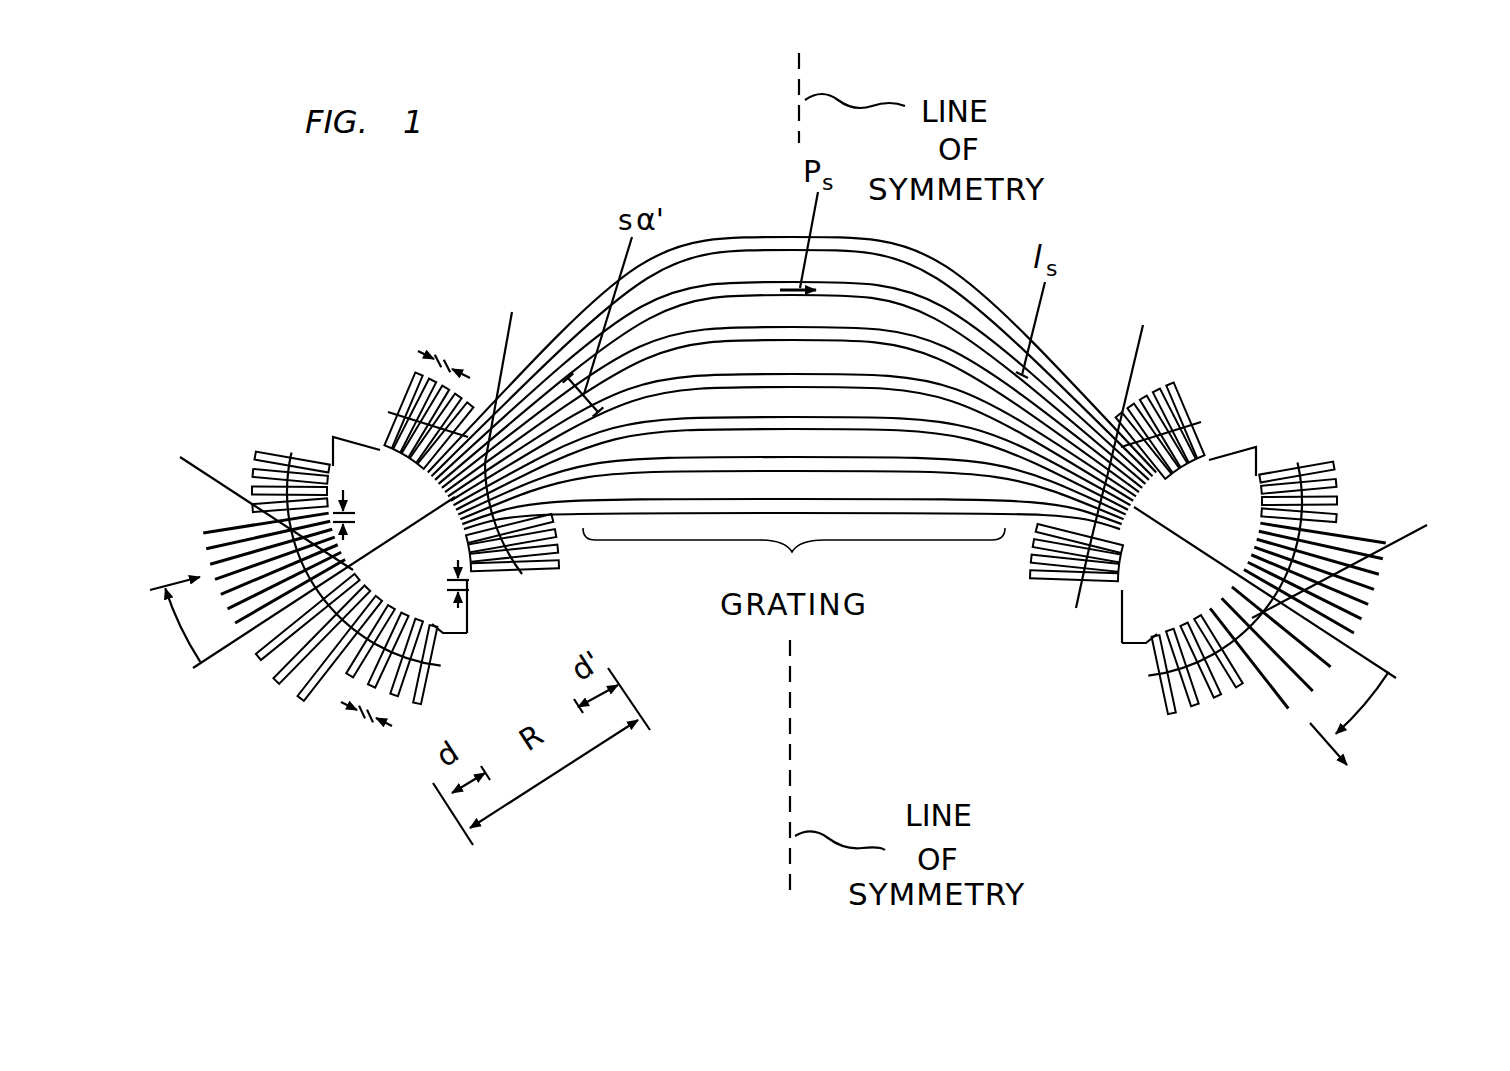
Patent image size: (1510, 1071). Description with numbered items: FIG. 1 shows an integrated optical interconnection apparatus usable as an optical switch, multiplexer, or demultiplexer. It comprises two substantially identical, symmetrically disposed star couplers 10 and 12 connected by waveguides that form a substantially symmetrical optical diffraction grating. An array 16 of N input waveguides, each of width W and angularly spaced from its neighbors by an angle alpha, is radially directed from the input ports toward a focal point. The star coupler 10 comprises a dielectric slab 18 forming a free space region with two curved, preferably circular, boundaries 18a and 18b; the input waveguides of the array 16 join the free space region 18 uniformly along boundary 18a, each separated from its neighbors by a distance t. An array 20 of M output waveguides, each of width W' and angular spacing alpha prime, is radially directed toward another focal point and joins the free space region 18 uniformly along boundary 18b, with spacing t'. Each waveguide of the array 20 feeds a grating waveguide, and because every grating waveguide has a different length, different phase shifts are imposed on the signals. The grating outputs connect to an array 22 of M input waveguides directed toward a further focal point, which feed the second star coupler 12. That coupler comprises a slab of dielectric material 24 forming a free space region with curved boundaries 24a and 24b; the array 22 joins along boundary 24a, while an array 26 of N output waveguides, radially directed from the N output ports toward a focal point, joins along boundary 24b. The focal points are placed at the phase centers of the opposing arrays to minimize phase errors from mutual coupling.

The star coupler 10 is at (340, 425).
The star coupler 12 is at (1273, 448).
The array of N input waveguides 16 is at (251, 666).
The dielectric slab 18 is at (410, 516).
The boundary 18a is at (443, 632).
The boundary 18b is at (476, 611).
The array of M output waveguides 20 is at (572, 572).
The array of M input waveguides 22 is at (1033, 540).
The slab of dielectric material 24 is at (1231, 534).
The boundary 24a is at (1125, 620).
The boundary 24b is at (1135, 650).
The array of N output waveguides 26 is at (1378, 612).